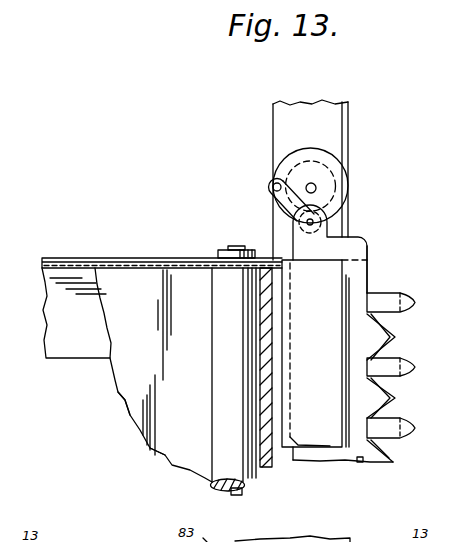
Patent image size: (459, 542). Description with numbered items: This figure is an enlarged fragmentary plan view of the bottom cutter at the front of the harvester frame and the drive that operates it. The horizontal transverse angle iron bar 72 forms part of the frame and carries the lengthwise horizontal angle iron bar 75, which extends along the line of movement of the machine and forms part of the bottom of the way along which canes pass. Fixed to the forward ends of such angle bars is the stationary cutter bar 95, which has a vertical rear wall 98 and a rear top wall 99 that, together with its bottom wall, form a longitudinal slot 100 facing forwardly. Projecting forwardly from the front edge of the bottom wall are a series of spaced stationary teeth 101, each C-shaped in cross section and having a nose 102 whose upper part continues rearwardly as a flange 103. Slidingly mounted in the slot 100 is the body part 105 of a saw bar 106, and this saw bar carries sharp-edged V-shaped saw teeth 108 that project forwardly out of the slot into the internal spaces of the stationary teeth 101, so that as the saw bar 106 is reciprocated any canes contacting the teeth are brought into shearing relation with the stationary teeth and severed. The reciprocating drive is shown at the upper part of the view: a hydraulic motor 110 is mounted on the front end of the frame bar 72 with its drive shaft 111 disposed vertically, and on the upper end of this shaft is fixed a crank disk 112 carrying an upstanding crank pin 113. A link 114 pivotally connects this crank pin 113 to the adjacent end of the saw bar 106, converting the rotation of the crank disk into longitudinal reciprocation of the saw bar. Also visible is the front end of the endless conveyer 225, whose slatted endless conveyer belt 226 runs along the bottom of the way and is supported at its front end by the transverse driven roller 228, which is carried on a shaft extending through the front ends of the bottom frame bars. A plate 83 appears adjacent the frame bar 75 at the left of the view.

The horizontal transverse angle iron bar 72 is at (340, 117).
The hydraulic motor 110 is at (308, 148).
The crank disk 112 is at (330, 163).
The drive shaft 111 is at (318, 188).
The crank pin 113 is at (273, 184).
The link 114 is at (284, 198).
The rear top wall 99 is at (318, 349).
The stationary cutter bar 95 is at (356, 278).
The flange 103 is at (392, 297).
The stationary teeth 101 is at (394, 358).
The nose 102 is at (416, 429).
The saw teeth 108 is at (396, 398).
The vertical rear wall 98 is at (280, 430).
The longitudinal slot 100 is at (299, 468).
The body part 105 is at (357, 466).
The saw bar 106 is at (363, 465).
The plate 83 is at (130, 258).
The horizontal angle iron bar 75 is at (66, 258).
The endless conveyer 225 is at (118, 402).
The slatted endless conveyer belt 226 is at (164, 442).
The driven roller 228 is at (212, 357).